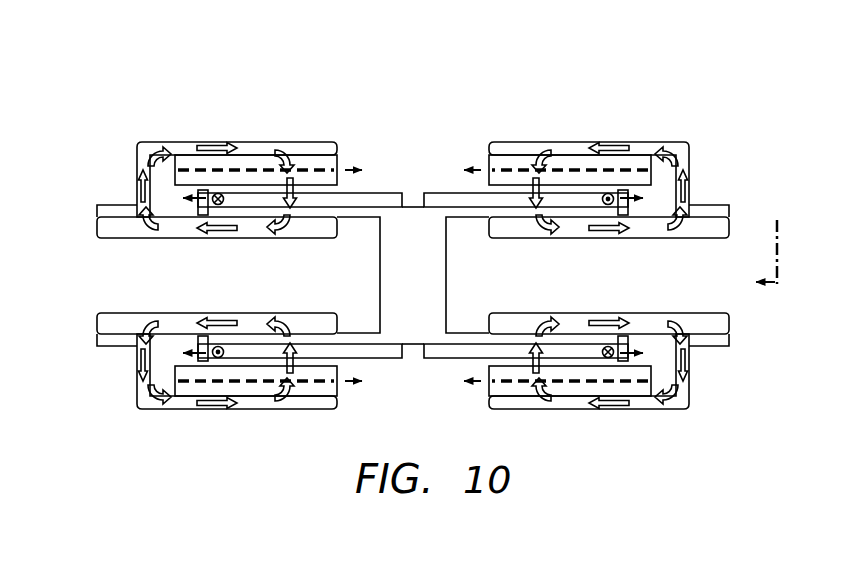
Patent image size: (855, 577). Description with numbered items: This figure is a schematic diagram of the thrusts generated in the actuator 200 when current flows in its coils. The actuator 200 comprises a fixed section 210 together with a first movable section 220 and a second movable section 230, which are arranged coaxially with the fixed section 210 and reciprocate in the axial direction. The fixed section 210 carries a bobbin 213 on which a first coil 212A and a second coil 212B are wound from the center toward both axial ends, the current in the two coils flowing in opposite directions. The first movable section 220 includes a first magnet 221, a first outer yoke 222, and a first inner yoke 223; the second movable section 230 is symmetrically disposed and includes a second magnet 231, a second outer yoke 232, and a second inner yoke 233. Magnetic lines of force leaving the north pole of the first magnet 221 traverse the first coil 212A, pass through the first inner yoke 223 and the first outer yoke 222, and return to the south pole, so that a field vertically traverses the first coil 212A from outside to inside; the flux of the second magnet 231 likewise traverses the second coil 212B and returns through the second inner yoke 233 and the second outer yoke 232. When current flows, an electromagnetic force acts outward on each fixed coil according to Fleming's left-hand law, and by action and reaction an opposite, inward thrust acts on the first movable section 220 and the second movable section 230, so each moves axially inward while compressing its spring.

The actuator 200 is at (94, 391).
The fixed section 210 is at (405, 184).
The first coil 212A is at (480, 193).
The second coil 212B is at (373, 193).
The bobbin 213 is at (436, 252).
The first movable section 220 is at (594, 122).
The first magnet 221 is at (636, 164).
The first outer yoke 222 is at (513, 147).
The first inner yoke 223 is at (705, 232).
The second movable section 230 is at (195, 118).
The second magnet 231 is at (242, 165).
The second outer yoke 232 is at (309, 147).
The second inner yoke 233 is at (112, 219).